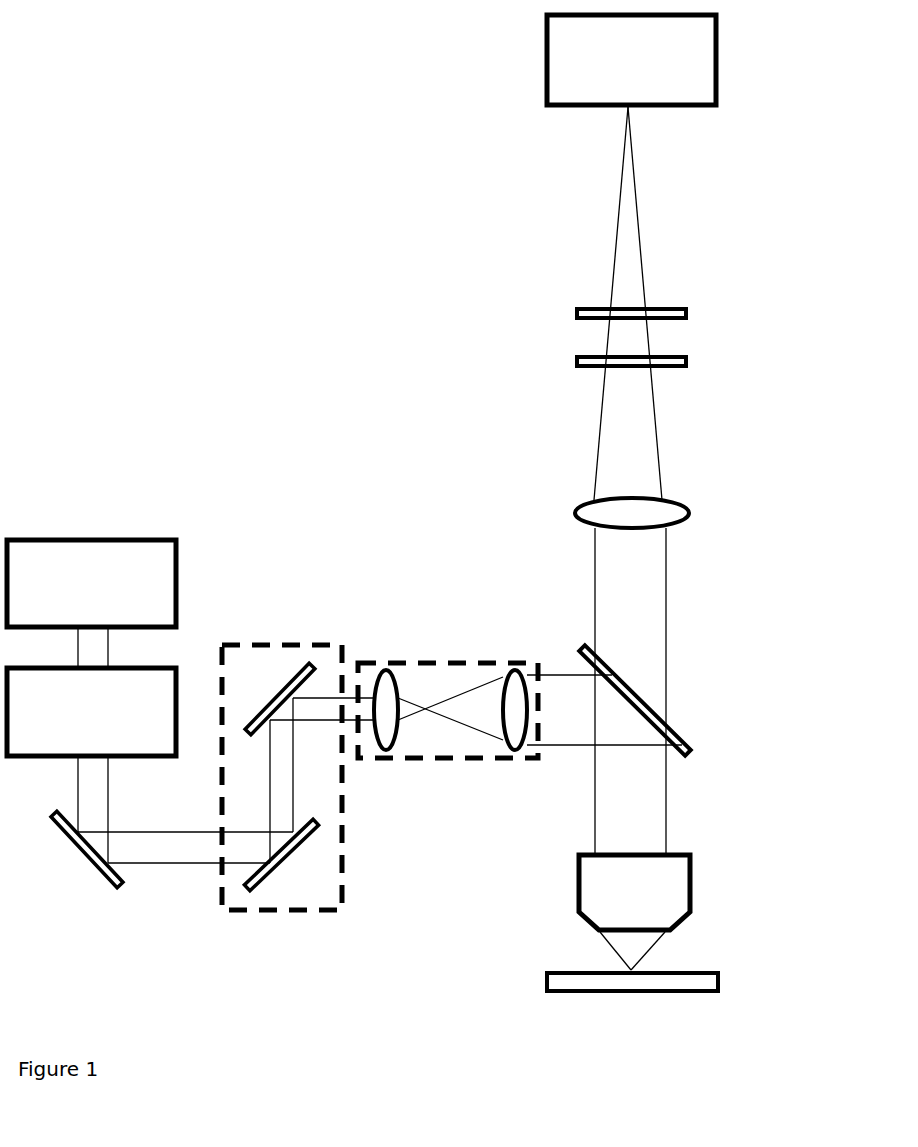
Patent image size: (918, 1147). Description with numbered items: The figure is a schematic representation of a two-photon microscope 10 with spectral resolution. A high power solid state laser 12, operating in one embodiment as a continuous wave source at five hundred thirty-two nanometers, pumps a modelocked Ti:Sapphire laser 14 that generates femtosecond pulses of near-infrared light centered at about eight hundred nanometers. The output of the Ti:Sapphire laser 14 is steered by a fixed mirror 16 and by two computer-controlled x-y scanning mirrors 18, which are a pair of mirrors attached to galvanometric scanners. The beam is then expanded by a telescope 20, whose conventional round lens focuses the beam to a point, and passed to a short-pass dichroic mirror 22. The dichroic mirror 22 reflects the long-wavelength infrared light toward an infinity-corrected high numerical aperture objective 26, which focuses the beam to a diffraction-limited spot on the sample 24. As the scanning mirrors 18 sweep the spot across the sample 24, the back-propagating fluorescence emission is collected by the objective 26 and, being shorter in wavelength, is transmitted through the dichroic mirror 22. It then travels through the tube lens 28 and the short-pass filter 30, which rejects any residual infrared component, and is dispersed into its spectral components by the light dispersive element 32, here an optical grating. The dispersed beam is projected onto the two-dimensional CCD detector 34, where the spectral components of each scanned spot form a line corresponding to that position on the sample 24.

The microscope 10 is at (272, 328).
The high power solid state laser 12 is at (178, 568).
The modelocked Ti:Sapphire laser 14 is at (147, 665).
The fixed mirror 16 is at (83, 855).
The x-y scanning mirrors 18 is at (342, 853).
The telescope 20 is at (465, 655).
The short-pass dichroic mirror 22 is at (693, 747).
The sample 24 is at (720, 981).
The objective 26 is at (692, 883).
The tube lens 28 is at (670, 528).
The short-pass filter 30 is at (688, 360).
The light dispersive element 32 is at (688, 312).
The CCD detector 34 is at (718, 63).